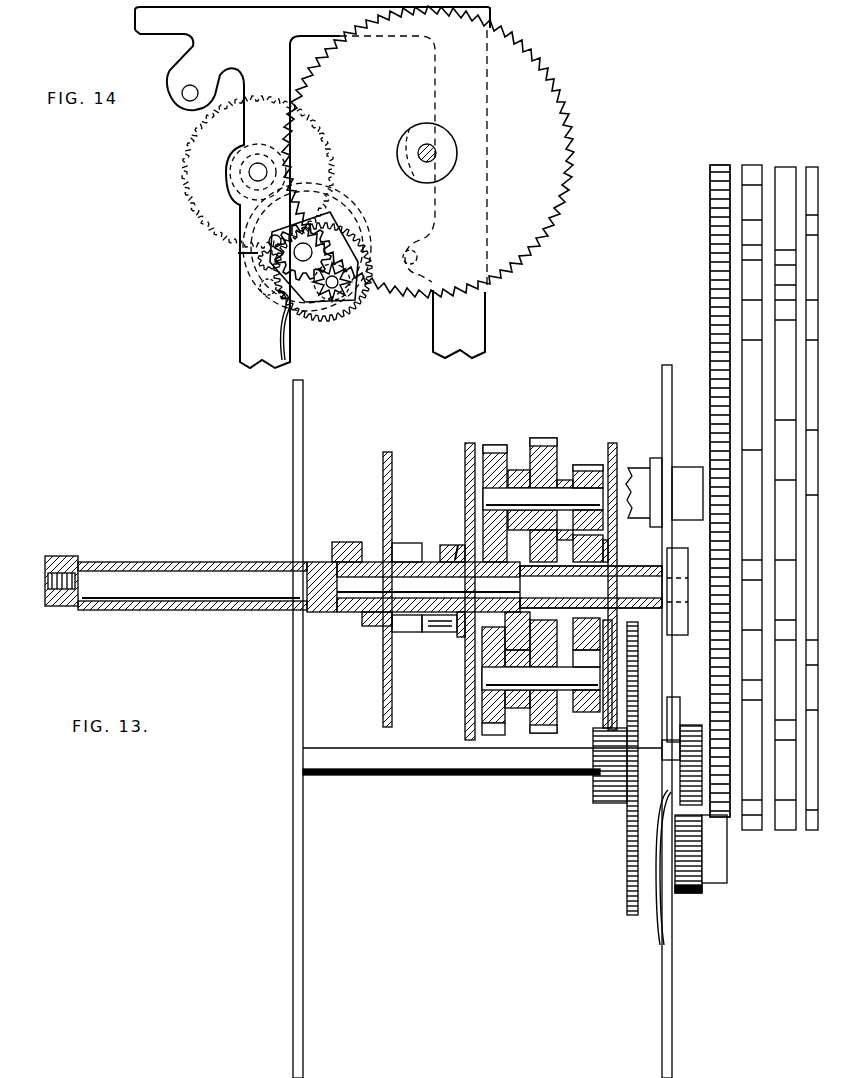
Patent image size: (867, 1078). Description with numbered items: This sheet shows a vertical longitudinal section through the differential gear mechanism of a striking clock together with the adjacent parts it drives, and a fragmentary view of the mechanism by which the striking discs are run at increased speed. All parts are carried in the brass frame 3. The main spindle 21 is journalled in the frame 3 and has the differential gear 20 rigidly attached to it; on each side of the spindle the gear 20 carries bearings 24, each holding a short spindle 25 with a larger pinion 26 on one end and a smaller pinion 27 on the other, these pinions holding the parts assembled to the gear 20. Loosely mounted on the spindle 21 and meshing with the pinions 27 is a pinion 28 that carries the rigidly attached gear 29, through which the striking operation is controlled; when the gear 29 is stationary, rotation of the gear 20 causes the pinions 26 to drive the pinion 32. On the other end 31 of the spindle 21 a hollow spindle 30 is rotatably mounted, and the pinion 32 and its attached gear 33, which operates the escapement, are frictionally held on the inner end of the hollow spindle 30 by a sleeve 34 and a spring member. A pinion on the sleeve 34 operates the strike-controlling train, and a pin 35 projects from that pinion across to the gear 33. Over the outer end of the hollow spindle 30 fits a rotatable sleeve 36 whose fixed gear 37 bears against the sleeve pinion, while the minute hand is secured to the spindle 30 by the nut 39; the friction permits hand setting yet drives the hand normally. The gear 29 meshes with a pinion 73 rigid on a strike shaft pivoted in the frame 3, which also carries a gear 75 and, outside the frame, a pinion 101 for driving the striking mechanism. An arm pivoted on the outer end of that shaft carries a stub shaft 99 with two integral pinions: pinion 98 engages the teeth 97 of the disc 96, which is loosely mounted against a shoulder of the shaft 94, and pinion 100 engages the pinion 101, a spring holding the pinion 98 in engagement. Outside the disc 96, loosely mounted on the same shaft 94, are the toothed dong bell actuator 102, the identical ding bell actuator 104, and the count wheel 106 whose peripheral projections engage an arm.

In FIG. 14, the frame 3 is at (133, 38).
In FIG. 13, the frame 3 is at (293, 456).
In FIG. 13, the differential gear 20 is at (550, 438).
In FIG. 13, the main spindle 21 is at (648, 572).
In FIG. 13, the bearings 24 is at (517, 470).
In FIG. 13, the short spindle 25 is at (540, 488).
In FIG. 13, the pinion 26 is at (494, 445).
In FIG. 13, the pinion 27 is at (591, 465).
In FIG. 14, the pinion 28 is at (250, 180).
In FIG. 13, the pinion 28 is at (605, 553).
In FIG. 14, the gear 29 is at (183, 152).
In FIG. 13, the gear 29 is at (617, 449).
In FIG. 13, the hollow spindle 30 is at (262, 571).
In FIG. 13, the spindle end 31 is at (350, 562).
In FIG. 13, the pinion 32 is at (461, 640).
In FIG. 13, the gear 33 is at (465, 456).
In FIG. 13, the sleeve 34 is at (410, 632).
In FIG. 13, the pin 35 is at (440, 632).
In FIG. 13, the sleeve 36 is at (217, 562).
In FIG. 13, the gear 37 is at (383, 480).
In FIG. 13, the nut 39 is at (60, 556).
In FIG. 14, the pinion 73 is at (308, 240).
In FIG. 13, the pinion 73 is at (593, 795).
In FIG. 14, the gear 75 is at (316, 322).
In FIG. 13, the gear 75 is at (627, 846).
In FIG. 14, the shaft 94 is at (426, 148).
In FIG. 13, the shaft 94 is at (688, 470).
In FIG. 14, the disc 96 is at (542, 78).
In FIG. 13, the disc 96 is at (710, 255).
In FIG. 14, the teeth 97 is at (565, 128).
In FIG. 13, the teeth 97 is at (720, 278).
In FIG. 14, the pinion 98 is at (342, 300).
In FIG. 13, the pinion 98 is at (727, 862).
In FIG. 14, the stub shaft 99 is at (358, 290).
In FIG. 14, the pinion 100 is at (352, 305).
In FIG. 13, the pinion 100 is at (700, 890).
In FIG. 14, the pinion 101 is at (256, 258).
In FIG. 13, the pinion 101 is at (691, 725).
In FIG. 13, the dong bell actuator 102 is at (758, 166).
In FIG. 13, the ding bell actuator 104 is at (790, 167).
In FIG. 13, the count wheel 106 is at (812, 167).